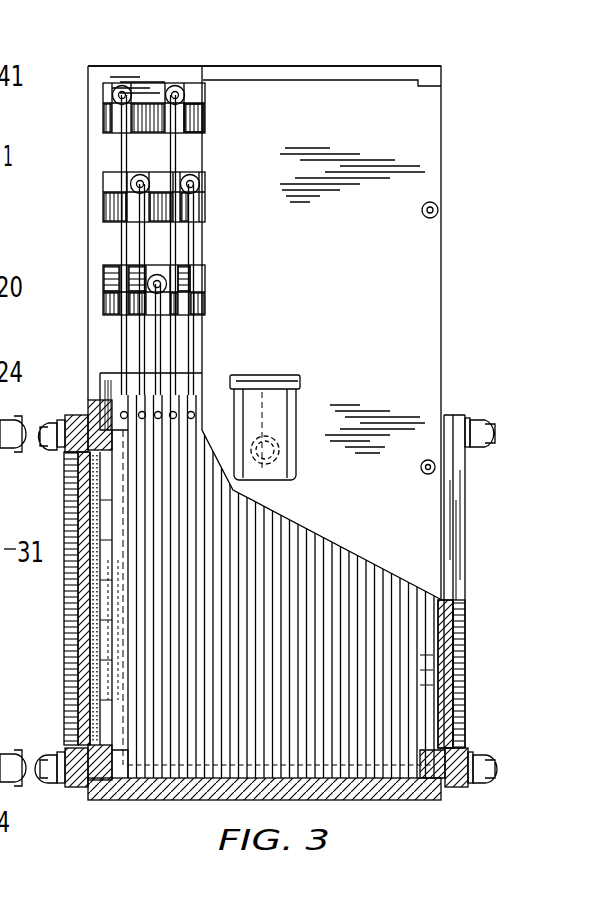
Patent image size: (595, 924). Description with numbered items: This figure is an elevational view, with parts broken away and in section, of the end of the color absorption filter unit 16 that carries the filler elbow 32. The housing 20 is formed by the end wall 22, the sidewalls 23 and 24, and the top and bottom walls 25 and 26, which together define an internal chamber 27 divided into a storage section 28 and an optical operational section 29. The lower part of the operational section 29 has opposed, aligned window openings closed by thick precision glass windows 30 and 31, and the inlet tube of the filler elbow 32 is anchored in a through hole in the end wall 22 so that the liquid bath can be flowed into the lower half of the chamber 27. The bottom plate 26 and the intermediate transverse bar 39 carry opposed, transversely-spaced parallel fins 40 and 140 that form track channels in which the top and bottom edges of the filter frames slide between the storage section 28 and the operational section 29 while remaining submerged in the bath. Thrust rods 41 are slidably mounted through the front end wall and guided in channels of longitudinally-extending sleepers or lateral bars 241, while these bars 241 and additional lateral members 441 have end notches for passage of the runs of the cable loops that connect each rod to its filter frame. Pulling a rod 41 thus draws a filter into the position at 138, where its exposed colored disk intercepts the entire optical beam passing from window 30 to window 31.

The color absorption filters apparatus or unit 16 is at (383, 62).
The housing 20 is at (441, 336).
The end wall 22 is at (348, 283).
The sidewall 23 is at (430, 752).
The sidewall 24 is at (97, 420).
The top wall 25 is at (243, 66).
The bottom wall 26 is at (158, 792).
The internal chamber 27 is at (85, 487).
The storage section 28 is at (117, 715).
The optical operational section 29 is at (413, 668).
The window 30 is at (447, 670).
The window 31 is at (80, 716).
The filler elbow 32 is at (302, 412).
The intermediate transverse bar 39 is at (115, 405).
The fins 40 is at (130, 786).
The thrust rods 41 is at (178, 82).
The exposed disk of colored filter sheet 138 is at (122, 570).
The fins 140 is at (108, 412).
The sleepers or lateral bars 241 is at (203, 92).
The lateral members 441 is at (202, 120).